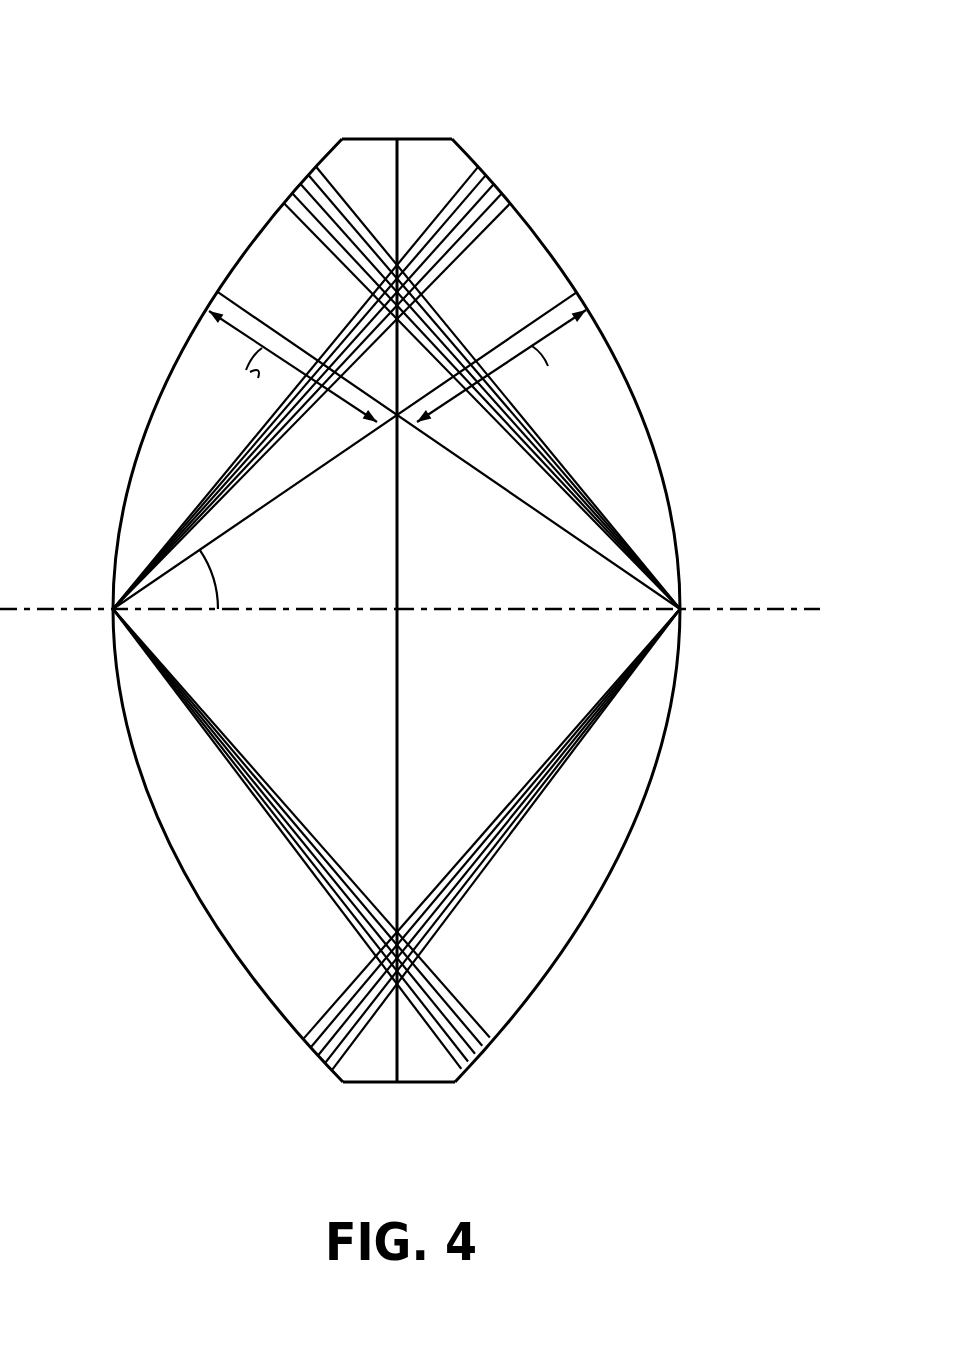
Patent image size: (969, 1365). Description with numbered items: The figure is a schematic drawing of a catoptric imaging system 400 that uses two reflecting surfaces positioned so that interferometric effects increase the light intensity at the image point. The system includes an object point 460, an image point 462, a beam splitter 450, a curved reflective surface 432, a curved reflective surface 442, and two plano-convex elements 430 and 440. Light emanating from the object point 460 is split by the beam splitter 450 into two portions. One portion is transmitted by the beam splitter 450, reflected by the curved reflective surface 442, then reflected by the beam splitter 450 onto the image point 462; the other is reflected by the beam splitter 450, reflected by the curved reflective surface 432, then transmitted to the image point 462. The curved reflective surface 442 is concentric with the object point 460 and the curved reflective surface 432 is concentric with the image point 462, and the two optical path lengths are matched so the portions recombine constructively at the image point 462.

The catoptric imaging system 400 is at (537, 92).
The plano-convex element 430 is at (222, 903).
The curved reflective surface 432 is at (183, 348).
The plano-convex element 440 is at (580, 885).
The curved reflective surface 442 is at (530, 257).
The beam splitter 450 is at (399, 700).
The object point 460 is at (113, 610).
The image point 462 is at (680, 607).